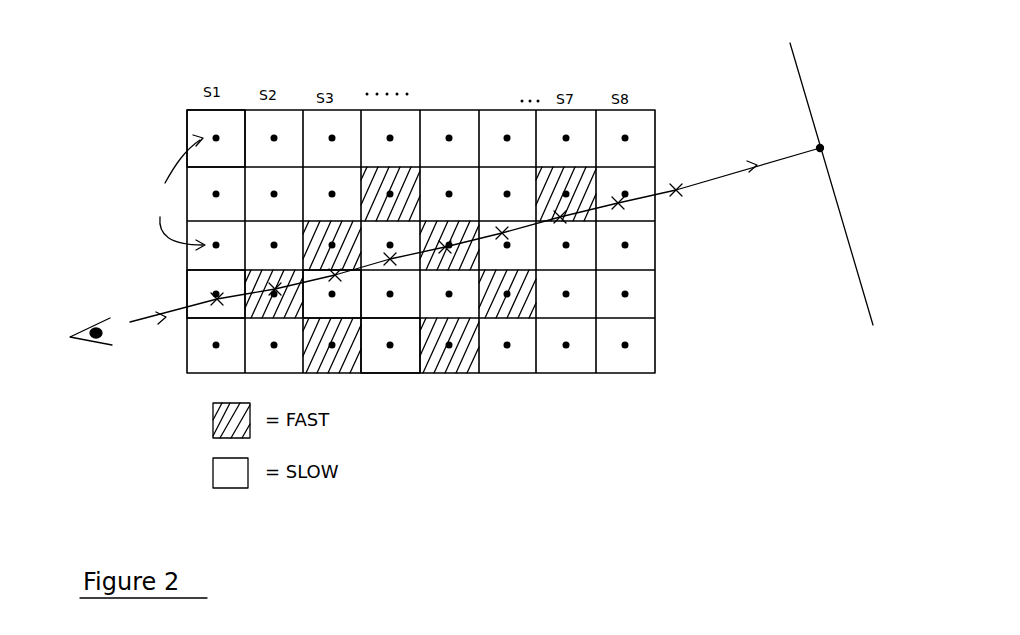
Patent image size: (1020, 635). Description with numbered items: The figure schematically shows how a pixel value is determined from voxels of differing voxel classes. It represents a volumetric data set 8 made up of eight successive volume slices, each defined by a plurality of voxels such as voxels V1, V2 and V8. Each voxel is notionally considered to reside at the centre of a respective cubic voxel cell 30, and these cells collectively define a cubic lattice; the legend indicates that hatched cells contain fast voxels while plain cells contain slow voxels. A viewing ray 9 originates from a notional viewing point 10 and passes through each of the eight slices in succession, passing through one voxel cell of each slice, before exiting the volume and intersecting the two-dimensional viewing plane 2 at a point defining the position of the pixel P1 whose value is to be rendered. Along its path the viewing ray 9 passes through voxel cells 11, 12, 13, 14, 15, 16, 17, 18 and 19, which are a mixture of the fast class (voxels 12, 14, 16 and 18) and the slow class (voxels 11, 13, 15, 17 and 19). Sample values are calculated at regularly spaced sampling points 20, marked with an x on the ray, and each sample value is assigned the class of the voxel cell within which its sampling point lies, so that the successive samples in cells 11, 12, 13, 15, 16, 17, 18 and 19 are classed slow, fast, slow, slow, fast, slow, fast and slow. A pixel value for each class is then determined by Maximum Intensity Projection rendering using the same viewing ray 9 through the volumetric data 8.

The 2D viewing plane 2 is at (814, 107).
The volumetric image data 8 is at (507, 87).
The viewing ray 9 is at (163, 317).
The viewing point 10 is at (91, 342).
The voxel cell 11 is at (227, 288).
The voxel cell 12 is at (287, 299).
The voxel cell 13 is at (333, 294).
The voxel cell 14 is at (345, 251).
The voxel cell 15 is at (404, 243).
The voxel cell 16 is at (460, 236).
The voxel cell 17 is at (516, 246).
The voxel cell 18 is at (577, 197).
The voxel cell 19 is at (635, 190).
The sampling points 20 is at (680, 198).
The cubic voxel cell 30 is at (187, 120).
The pixel P1 is at (816, 157).
The voxel V1 is at (203, 193).
The voxel V2 is at (274, 137).
The voxel V8 is at (626, 136).